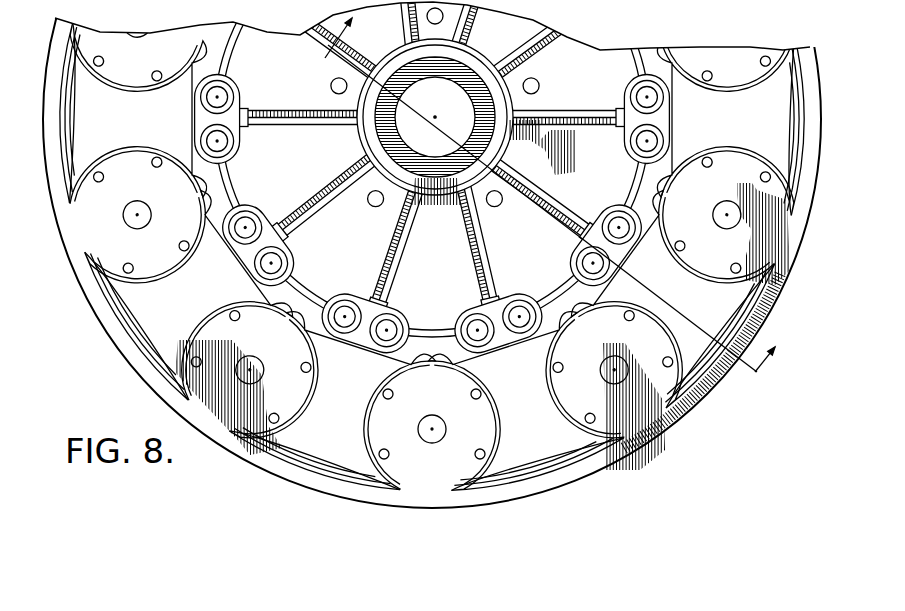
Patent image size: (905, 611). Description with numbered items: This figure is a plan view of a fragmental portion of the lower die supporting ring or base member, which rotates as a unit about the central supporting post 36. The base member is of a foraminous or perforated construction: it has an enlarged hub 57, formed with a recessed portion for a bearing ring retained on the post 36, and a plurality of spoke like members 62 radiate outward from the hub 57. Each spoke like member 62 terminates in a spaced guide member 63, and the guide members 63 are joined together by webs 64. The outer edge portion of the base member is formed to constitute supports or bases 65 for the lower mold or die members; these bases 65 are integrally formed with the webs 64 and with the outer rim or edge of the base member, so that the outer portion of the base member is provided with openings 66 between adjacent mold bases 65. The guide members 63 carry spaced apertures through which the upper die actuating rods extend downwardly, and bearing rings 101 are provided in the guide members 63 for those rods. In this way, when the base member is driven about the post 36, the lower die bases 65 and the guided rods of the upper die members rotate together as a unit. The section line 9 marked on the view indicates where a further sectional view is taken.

The section line 9- 9 is at (543, 199).
The post 36 is at (463, 108).
The hub 57 is at (430, 184).
The spoke like members 62 is at (556, 214).
The guide members 63 is at (472, 312).
The webs 64 is at (313, 297).
The bases 65 is at (575, 310).
The openings 66 is at (503, 341).
The bearing rings 101 is at (383, 343).